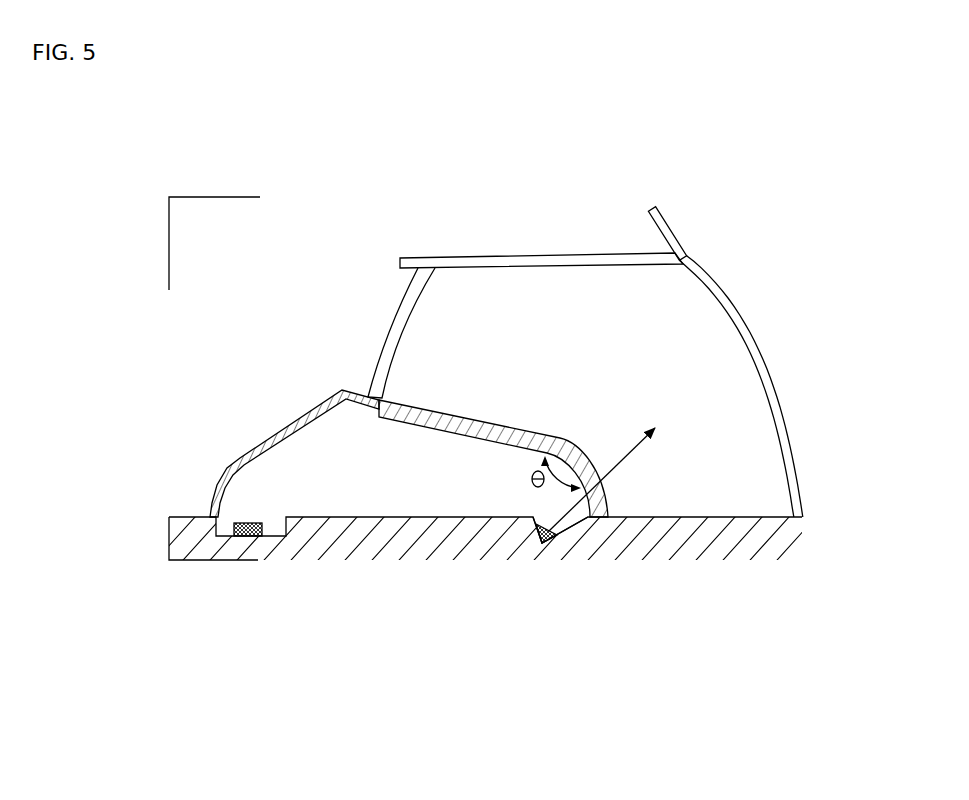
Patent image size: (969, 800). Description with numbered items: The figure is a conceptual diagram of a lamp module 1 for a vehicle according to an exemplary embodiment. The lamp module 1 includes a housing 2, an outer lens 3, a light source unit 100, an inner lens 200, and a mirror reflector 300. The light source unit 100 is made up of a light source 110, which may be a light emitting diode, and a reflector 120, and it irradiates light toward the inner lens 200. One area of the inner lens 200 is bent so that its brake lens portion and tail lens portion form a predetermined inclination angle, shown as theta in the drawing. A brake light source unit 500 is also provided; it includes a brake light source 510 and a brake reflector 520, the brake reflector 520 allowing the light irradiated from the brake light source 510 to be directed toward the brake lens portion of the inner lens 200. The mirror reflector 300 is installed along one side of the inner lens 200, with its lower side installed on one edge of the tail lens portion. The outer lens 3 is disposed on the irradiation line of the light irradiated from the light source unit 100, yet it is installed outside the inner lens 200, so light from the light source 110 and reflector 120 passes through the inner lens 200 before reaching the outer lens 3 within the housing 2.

The lamp module 1 is at (162, 147).
The housing 2 is at (673, 228).
The outer lens 3 is at (740, 318).
The light source unit 100 is at (100, 478).
The light source 110 is at (257, 538).
The reflector 120 is at (260, 447).
The inner lens 200 is at (567, 443).
The mirror reflector 300 is at (393, 327).
The brake light source unit 500 is at (620, 715).
The brake light source 510 is at (553, 540).
The brake reflector 520 is at (537, 528).